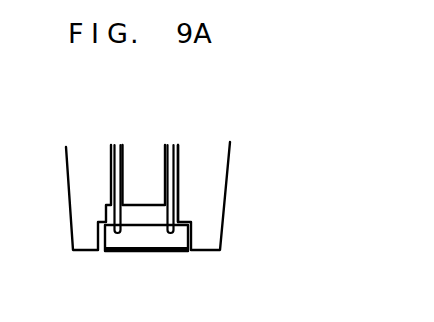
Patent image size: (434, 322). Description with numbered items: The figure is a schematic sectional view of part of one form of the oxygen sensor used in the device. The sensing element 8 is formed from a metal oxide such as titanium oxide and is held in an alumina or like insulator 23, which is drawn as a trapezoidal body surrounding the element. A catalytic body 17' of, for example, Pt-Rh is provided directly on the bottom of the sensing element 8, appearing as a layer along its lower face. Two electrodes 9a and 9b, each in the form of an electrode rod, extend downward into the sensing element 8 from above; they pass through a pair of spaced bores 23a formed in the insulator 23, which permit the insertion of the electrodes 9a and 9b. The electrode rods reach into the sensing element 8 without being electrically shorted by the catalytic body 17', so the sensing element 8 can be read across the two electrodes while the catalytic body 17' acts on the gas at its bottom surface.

The insulator 23 is at (226, 183).
The spaced bores 23a is at (178, 146).
The electrode 9a is at (116, 144).
The electrode 9b is at (167, 144).
The sensing element 8 is at (103, 243).
The catalytic body 17' is at (146, 269).